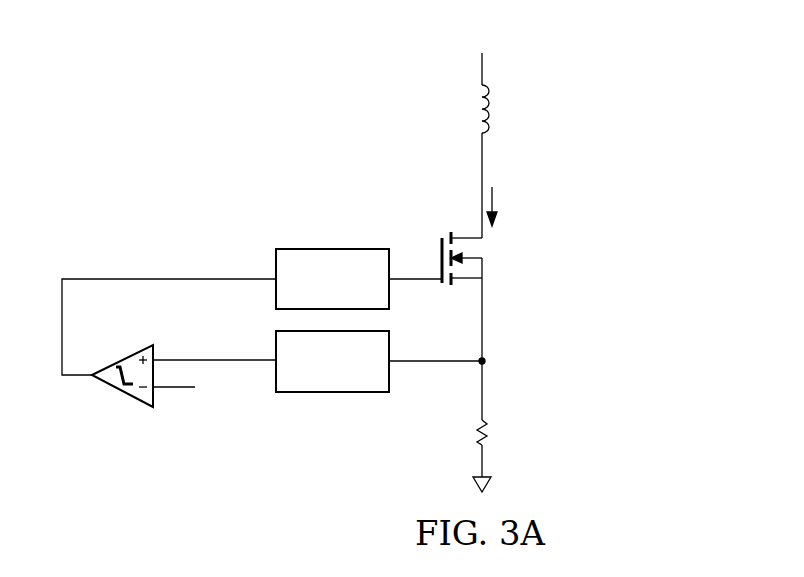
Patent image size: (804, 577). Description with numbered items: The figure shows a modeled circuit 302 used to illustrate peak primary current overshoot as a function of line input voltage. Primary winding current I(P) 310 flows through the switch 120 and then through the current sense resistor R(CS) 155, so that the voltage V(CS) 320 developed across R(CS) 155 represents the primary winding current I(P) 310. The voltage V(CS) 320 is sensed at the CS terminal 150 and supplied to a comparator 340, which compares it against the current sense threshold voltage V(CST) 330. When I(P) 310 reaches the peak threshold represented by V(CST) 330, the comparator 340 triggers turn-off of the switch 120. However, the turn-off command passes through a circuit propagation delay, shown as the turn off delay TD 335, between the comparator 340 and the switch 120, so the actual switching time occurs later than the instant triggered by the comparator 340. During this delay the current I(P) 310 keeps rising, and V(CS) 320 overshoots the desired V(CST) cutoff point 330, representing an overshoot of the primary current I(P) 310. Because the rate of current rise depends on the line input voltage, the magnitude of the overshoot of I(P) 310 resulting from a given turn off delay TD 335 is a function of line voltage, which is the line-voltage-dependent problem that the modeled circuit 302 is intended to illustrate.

The modeled circuit 302 is at (229, 148).
The switch 120 is at (441, 252).
The primary winding current I(P) 310 is at (494, 205).
The voltage V(CS) 320 is at (486, 363).
The current sense resistor R(CS) 155 is at (490, 435).
The turn off delay TD 335 is at (333, 249).
The comparator 340 is at (120, 391).
The current sense threshold voltage V(CST) 330 is at (223, 398).
The CS terminal 150 is at (334, 392).